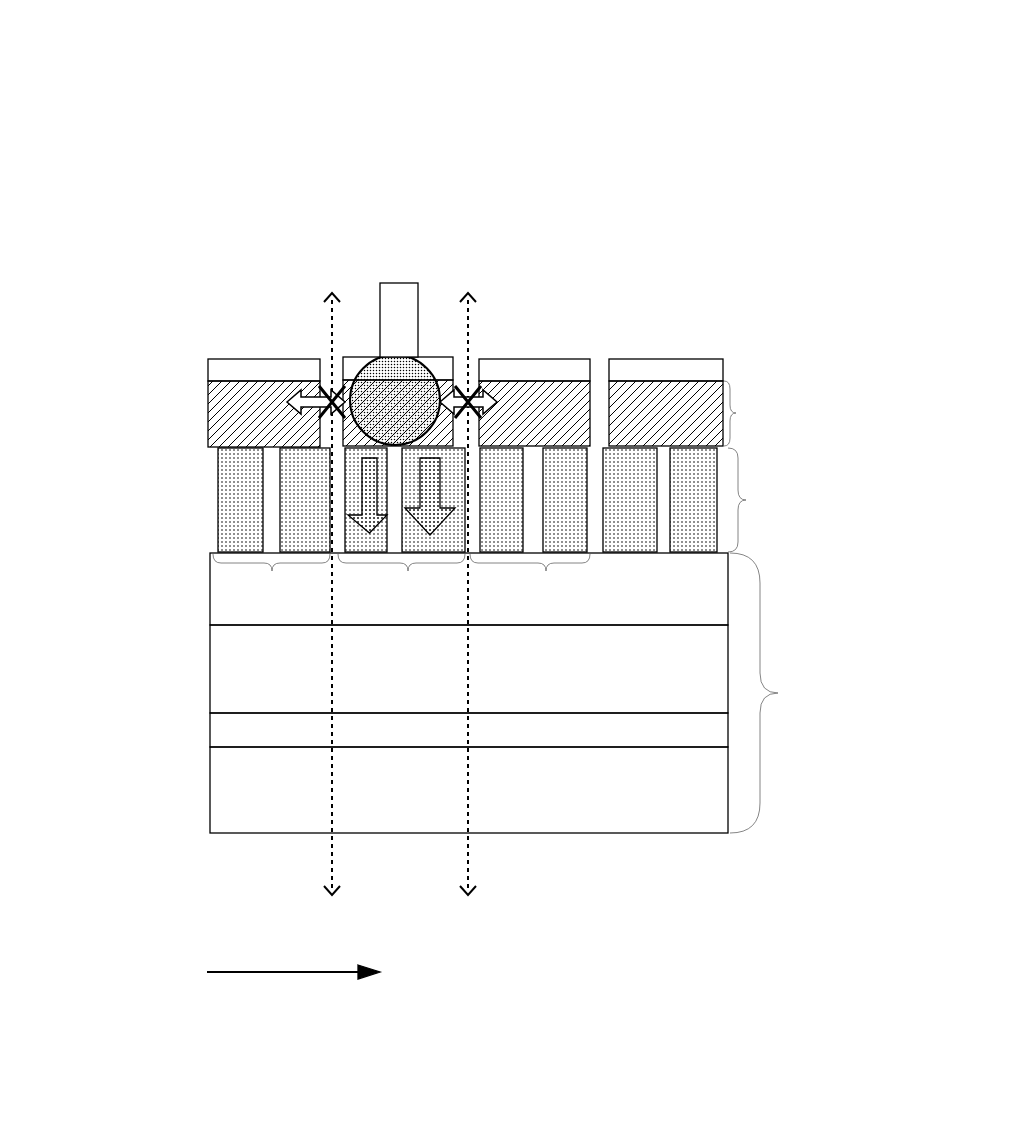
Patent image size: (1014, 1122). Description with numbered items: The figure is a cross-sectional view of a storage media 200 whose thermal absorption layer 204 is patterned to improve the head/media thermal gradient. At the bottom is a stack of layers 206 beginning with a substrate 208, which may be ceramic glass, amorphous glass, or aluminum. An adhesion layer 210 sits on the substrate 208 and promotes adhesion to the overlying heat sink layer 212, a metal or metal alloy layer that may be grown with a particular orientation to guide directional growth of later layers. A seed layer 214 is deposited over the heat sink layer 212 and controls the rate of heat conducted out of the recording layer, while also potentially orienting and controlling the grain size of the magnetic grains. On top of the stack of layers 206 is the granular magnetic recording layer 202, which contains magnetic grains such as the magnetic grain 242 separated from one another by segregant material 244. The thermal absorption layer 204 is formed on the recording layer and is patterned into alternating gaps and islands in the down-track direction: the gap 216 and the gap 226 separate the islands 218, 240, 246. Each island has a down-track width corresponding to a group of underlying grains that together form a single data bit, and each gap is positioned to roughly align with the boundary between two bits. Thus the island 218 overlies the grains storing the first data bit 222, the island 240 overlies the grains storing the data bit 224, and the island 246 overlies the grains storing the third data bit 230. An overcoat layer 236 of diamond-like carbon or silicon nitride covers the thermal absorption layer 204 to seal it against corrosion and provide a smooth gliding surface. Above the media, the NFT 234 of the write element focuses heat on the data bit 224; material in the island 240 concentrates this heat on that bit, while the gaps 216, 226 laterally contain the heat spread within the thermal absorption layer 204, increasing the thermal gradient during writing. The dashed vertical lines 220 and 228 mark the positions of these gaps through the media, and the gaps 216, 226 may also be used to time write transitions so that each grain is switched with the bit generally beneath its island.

The storage media 200 is at (178, 71).
The granular magnetic recording layer 202 is at (745, 503).
The thermal absorption layer 204 is at (733, 412).
The stack of layers 206 is at (785, 695).
The substrate 208 is at (469, 790).
The adhesion layer 210 is at (469, 730).
The heat sink layer 212 is at (469, 669).
The seed layer 214 is at (469, 589).
The gap 216 is at (321, 352).
The island 218 is at (264, 414).
The first boundary line 220 is at (332, 670).
The first data bit 222 is at (272, 575).
The data bit 224 is at (412, 575).
The gap 226 is at (485, 350).
The second boundary line 228 is at (468, 695).
The third data bit 230 is at (546, 575).
The NFT 234 is at (402, 305).
The overcoat layer 236 is at (727, 373).
The island 240 is at (395, 400).
The magnetic grain 242 is at (693, 473).
The segregant material 244 is at (272, 485).
The island 246 is at (534, 413).